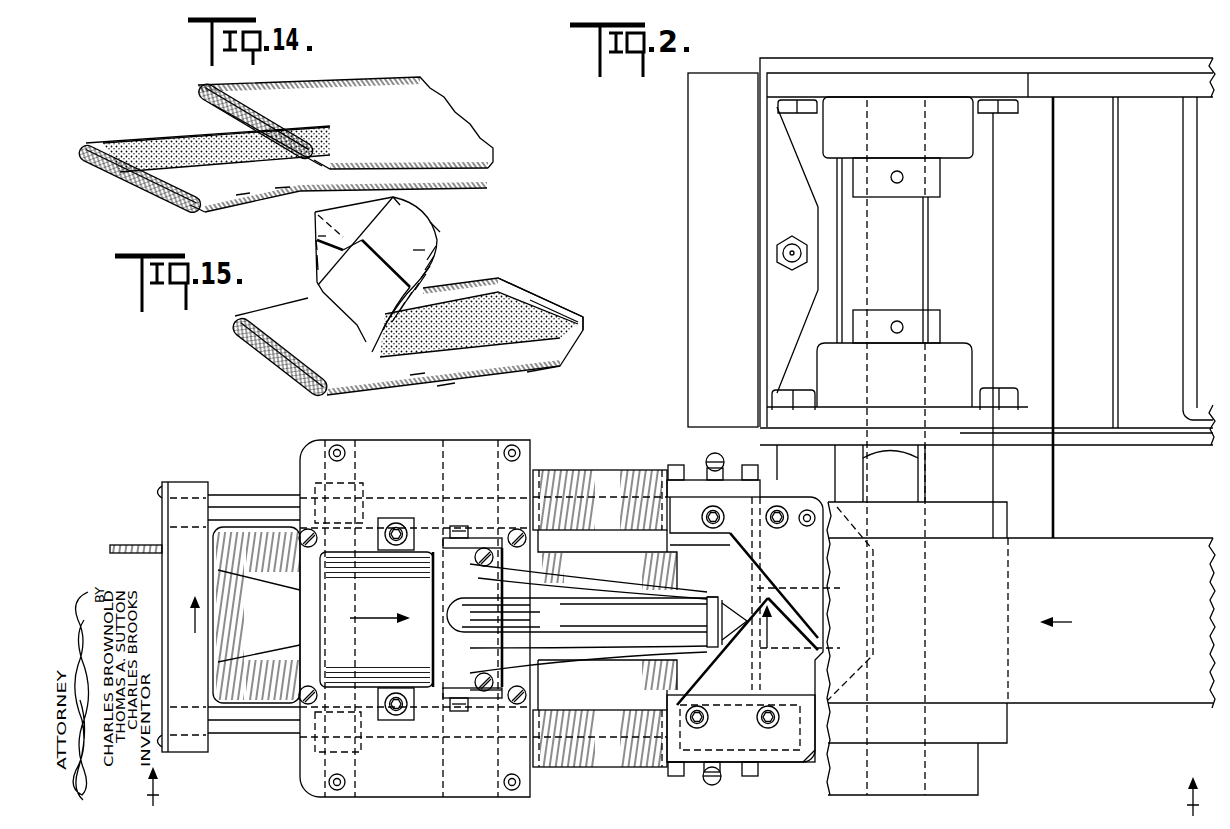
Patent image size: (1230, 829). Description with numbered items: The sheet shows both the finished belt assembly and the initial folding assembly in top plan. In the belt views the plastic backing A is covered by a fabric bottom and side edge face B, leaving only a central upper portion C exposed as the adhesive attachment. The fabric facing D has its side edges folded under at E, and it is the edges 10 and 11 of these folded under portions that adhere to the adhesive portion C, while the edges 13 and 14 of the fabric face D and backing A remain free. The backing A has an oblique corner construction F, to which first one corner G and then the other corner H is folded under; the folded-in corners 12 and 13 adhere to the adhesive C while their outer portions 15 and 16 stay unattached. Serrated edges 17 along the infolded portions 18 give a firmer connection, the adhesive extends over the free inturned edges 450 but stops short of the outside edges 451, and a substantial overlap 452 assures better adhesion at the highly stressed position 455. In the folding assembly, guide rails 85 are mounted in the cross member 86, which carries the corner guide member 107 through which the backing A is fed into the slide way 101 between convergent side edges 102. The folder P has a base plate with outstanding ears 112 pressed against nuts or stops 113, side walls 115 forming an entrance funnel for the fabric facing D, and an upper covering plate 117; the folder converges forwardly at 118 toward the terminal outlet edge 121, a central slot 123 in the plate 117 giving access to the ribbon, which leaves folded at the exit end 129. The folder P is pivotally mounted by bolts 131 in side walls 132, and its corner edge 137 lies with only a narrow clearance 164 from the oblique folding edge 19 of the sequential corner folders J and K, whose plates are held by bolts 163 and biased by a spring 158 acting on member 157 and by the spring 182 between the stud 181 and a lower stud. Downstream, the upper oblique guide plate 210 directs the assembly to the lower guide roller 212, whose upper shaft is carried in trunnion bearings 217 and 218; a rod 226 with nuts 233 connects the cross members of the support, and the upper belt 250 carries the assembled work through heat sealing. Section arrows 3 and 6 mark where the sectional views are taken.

In FIG. 14, the edge of folded under portion 10 is at (270, 140).
In FIG. 14, the edge of folded under portion 11 is at (238, 121).
In FIG. 15, the folded-in corner 12 is at (353, 246).
In FIG. 14, the folded-in corner 13 is at (196, 89).
In FIG. 15, the folded-in corner 13 is at (364, 234).
In FIG. 14, the edge of backing 14 is at (489, 168).
In FIG. 15, the outer portion of in-folded corner 15 is at (315, 266).
In FIG. 15, the outer portion of in-folded corner 16 is at (402, 208).
In FIG. 14, the serrated edges 17 is at (148, 150).
In FIG. 15, the serrated edges 17 is at (508, 283).
In FIG. 15, the infolded portions 18 is at (469, 277).
In FIG. 2, the oblique folding edge 19 is at (717, 662).
In FIG. 2, the guide rails 85 is at (242, 497).
In FIG. 2, the cross member 86 is at (181, 481).
In FIG. 2, the slide way 101 is at (227, 643).
In FIG. 2, the convergent side edges 102 is at (258, 576).
In FIG. 2, the corner guide member 107 is at (128, 545).
In FIG. 2, the outstanding ears 112 is at (395, 521).
In FIG. 2, the nuts or studs 113 is at (453, 538).
In FIG. 2, the side walls 115 is at (352, 552).
In FIG. 2, the upper covering plate 117 is at (466, 580).
In FIG. 2, the forward convergence of folder 118 is at (568, 583).
In FIG. 2, the terminal outlet edge 121 is at (702, 617).
In FIG. 2, the central slot 123 is at (470, 637).
In FIG. 2, the exit end 129 is at (687, 597).
In FIG. 2, the pivot bolts 131 is at (453, 712).
In FIG. 2, the side walls of U-shaped bracket 132 is at (484, 700).
In FIG. 2, the corner edge 137 is at (730, 604).
In FIG. 2, the spring-connected member 157 is at (704, 776).
In FIG. 2, the spring 158 is at (713, 785).
In FIG. 2, the bolts 163 is at (685, 718).
In FIG. 2, the narrow clearance 164 is at (757, 652).
In FIG. 2, the stud 181 is at (715, 455).
In FIG. 2, the spring 182 is at (706, 458).
In FIG. 2, the upper oblique guide plate 210 is at (912, 252).
In FIG. 2, the lower guide roller 212 is at (995, 731).
In FIG. 2, the trunnion bearing 217 is at (965, 141).
In FIG. 2, the trunnion bearing 218 is at (962, 360).
In FIG. 2, the rod 226 is at (777, 254).
In FIG. 2, the nuts 233 is at (789, 236).
In FIG. 2, the upper belt 250 is at (900, 623).
In FIG. 15, the free inturned edges 450 is at (413, 252).
In FIG. 15, the outside edges 451 is at (330, 315).
In FIG. 15, the overlap point 452 is at (300, 248).
In FIG. 15, the position of maximum stress 455 is at (553, 318).
In FIG. 2, the section arrow 3 is at (673, 791).
In FIG. 2, the section arrow 6 is at (477, 622).
In FIG. 14, the plastic backing A is at (113, 181).
In FIG. 15, the plastic backing A is at (527, 377).
In FIG. 14, the fabric bottom and side edge face B is at (197, 208).
In FIG. 15, the fabric bottom and side edge face B is at (442, 381).
In FIG. 14, the central adhesive portion C is at (242, 200).
In FIG. 15, the central adhesive portion C is at (417, 345).
In FIG. 14, the fabric facing D is at (413, 83).
In FIG. 14, the folded under side edges E is at (281, 195).
In FIG. 15, the oblique corner construction F is at (582, 330).
In FIG. 15, the first corner G is at (314, 249).
In FIG. 15, the second corner H is at (444, 222).
In FIG. 2, the corner folder J is at (799, 776).
In FIG. 2, the corner folder K is at (800, 544).
In FIG. 2, the folder mechanism P is at (630, 649).